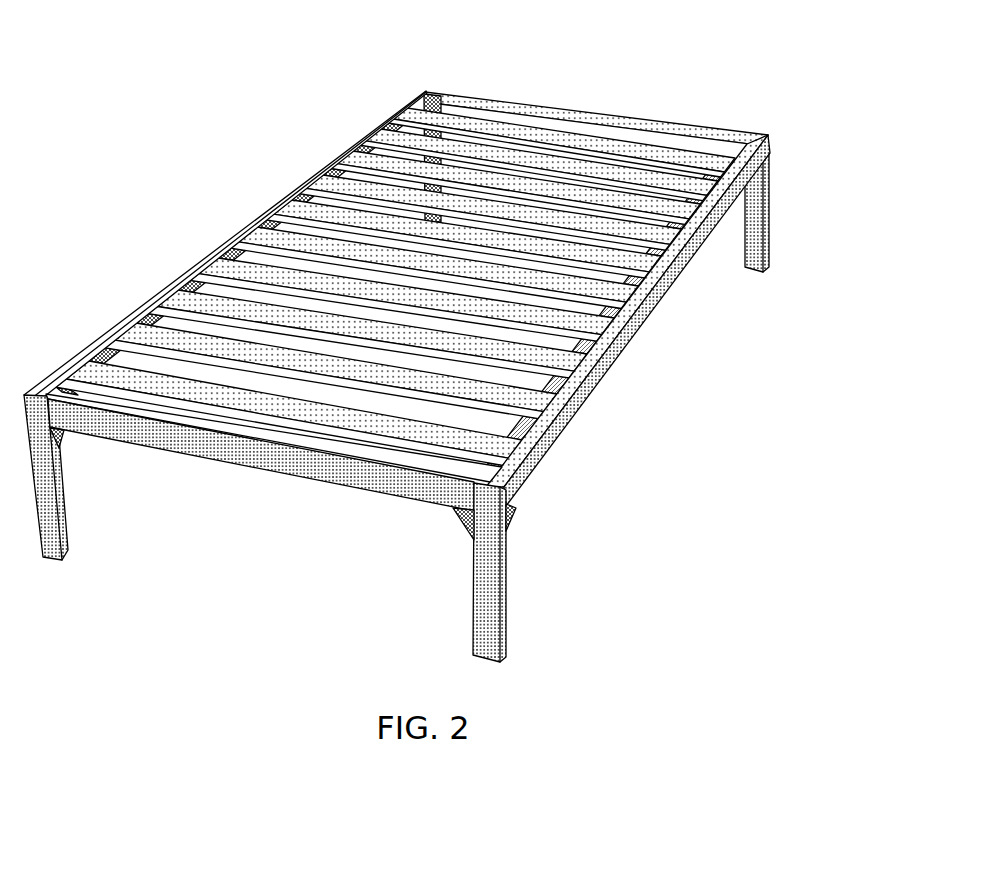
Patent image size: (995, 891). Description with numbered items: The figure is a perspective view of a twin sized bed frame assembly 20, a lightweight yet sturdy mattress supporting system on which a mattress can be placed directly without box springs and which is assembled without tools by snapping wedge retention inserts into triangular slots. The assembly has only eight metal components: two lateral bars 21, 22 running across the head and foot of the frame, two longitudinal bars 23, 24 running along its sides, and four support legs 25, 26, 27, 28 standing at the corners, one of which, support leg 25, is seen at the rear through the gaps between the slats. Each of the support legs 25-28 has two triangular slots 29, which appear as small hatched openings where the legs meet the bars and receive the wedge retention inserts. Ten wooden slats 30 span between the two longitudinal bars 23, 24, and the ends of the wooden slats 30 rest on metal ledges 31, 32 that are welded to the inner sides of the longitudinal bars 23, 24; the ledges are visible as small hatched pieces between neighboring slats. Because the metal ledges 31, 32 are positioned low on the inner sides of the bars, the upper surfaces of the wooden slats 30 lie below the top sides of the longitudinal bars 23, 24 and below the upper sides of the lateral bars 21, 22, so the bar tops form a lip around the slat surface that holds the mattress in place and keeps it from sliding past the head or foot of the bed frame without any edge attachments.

The bed frame assembly 20 is at (266, 104).
The lateral bar 21 is at (690, 123).
The lateral bar 22 is at (299, 477).
The longitudinal bar 23 is at (221, 249).
The longitudinal bar 24 is at (632, 344).
The support leg 25 is at (431, 93).
The support leg 26 is at (66, 562).
The support leg 27 is at (507, 607).
The support leg 28 is at (752, 272).
The triangular slot 29 is at (67, 453).
The wooden slats 30 is at (90, 354).
The metal ledge 31 is at (125, 356).
The metal ledge 32 is at (519, 438).